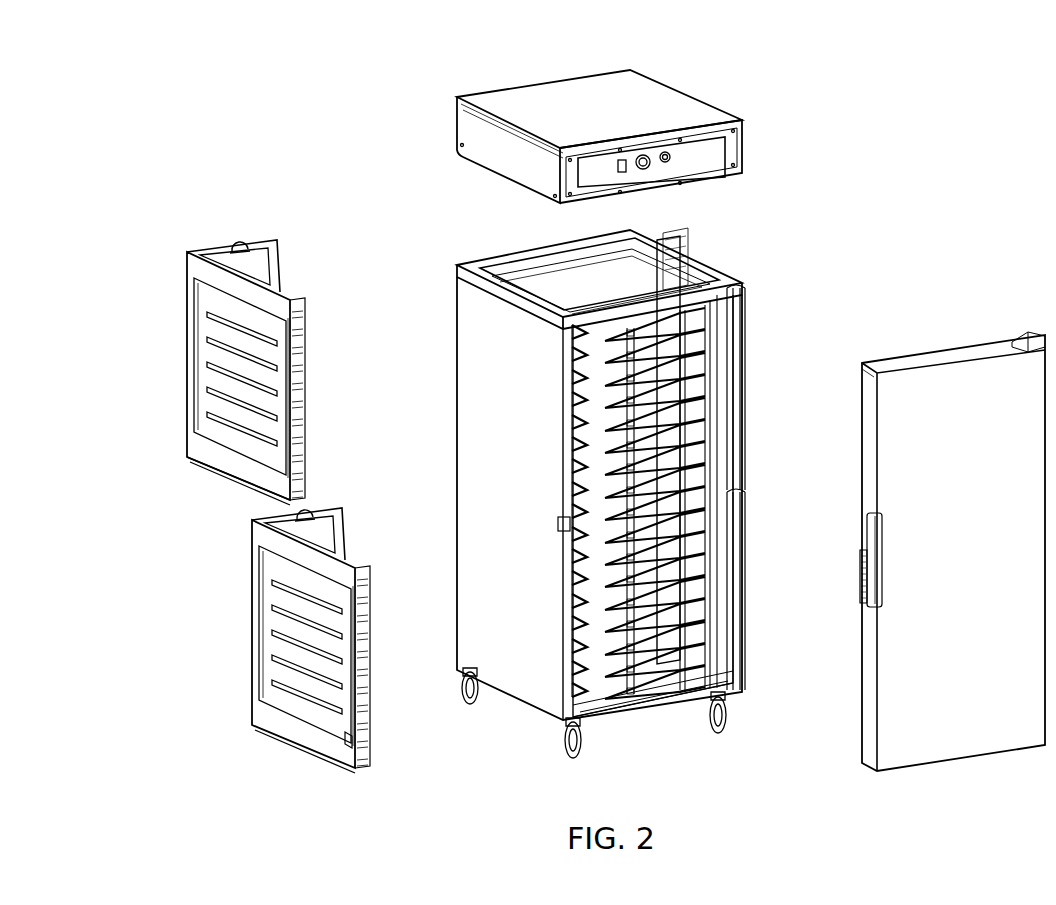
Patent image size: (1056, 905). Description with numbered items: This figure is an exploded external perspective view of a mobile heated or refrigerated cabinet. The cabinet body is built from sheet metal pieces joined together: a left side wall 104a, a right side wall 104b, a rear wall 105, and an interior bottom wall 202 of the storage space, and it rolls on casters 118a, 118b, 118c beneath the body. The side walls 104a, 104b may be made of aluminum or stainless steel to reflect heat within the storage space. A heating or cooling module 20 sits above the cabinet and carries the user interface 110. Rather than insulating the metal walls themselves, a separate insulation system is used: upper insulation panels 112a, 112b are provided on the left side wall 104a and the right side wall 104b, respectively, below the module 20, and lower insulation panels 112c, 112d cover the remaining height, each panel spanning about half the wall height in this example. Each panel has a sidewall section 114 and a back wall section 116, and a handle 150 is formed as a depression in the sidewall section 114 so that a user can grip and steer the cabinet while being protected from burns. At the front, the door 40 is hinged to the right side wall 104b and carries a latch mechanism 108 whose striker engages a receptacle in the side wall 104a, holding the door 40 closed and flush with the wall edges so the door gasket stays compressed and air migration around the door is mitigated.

The heating or cooling module 20 is at (629, 121).
The user interface 110 is at (712, 152).
The left side wall 104a is at (610, 506).
The right side wall 104b is at (648, 273).
The rear wall 105 is at (528, 280).
The upper insulation panel 112a is at (290, 356).
The upper insulation panel 112b is at (747, 360).
The lower insulation panel 112c is at (321, 656).
The lower insulation panel 112d is at (747, 637).
The sidewall section 114 is at (216, 468).
The back wall section 116 is at (226, 250).
The caster 118a is at (575, 758).
The caster 118b is at (720, 735).
The caster 118c is at (474, 702).
The insulation panel handle 150 is at (352, 742).
The interior bottom wall 202 is at (613, 692).
The latch mechanism 108 is at (860, 572).
The door 40 is at (915, 574).